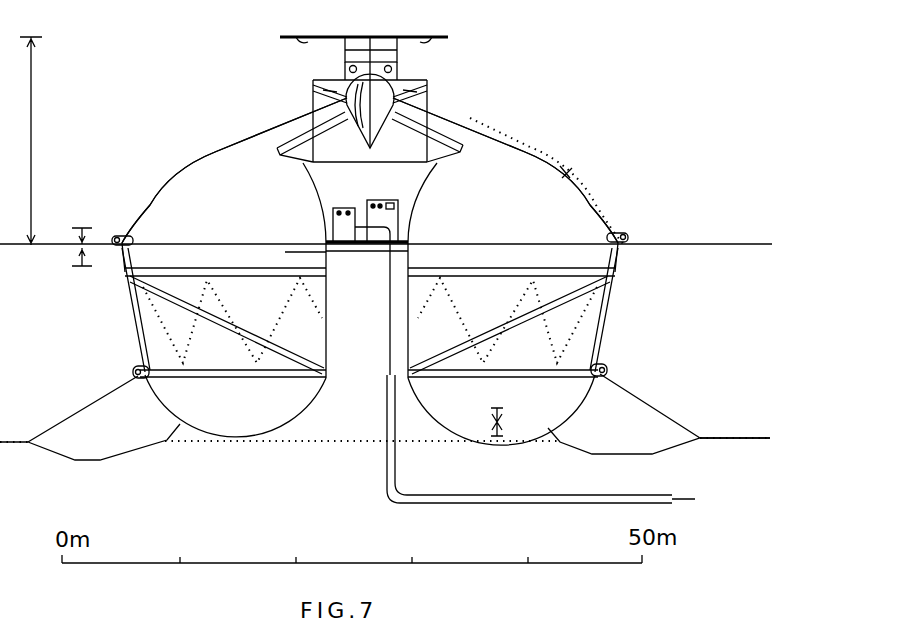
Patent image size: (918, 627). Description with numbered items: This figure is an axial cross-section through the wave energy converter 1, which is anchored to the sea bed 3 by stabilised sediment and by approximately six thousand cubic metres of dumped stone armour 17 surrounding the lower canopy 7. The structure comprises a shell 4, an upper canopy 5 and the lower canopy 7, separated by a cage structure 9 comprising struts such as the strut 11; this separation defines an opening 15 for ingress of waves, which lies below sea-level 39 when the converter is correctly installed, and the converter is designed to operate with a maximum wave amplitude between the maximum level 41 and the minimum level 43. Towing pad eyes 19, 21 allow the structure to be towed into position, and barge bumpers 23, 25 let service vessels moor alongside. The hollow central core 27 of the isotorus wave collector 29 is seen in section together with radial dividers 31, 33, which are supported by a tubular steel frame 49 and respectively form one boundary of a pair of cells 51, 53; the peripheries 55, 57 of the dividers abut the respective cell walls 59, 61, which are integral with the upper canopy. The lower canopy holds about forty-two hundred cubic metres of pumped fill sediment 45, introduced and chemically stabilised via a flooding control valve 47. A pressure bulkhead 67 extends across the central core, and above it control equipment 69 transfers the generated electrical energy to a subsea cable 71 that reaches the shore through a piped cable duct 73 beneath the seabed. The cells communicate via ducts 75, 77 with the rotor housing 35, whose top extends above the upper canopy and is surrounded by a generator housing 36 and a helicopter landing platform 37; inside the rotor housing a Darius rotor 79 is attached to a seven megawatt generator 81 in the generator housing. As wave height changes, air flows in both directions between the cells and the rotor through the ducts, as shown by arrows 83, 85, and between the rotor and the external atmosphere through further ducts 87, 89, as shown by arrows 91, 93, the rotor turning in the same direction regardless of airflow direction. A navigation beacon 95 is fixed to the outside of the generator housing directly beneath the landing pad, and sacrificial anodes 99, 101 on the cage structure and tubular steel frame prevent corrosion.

The wave energy converter 1 is at (635, 126).
The sea bed 3 is at (738, 438).
The shell 4 is at (548, 142).
The upper canopy 5 is at (563, 173).
The lower canopy 7 is at (457, 420).
The cage structure 9 is at (126, 290).
The strut 11 is at (140, 340).
The opening 15 is at (590, 298).
The dumped stone armour 17 is at (648, 430).
The towing pad eye 19 is at (130, 378).
The towing pad eye 21 is at (602, 373).
The barge bumper 23 is at (117, 235).
The barge bumper 25 is at (627, 236).
The hollow central core 27 is at (360, 412).
The isotorus wave collector 29 is at (618, 257).
The radial divider 31 is at (240, 318).
The radial divider 33 is at (488, 313).
The rotor housing 35 is at (432, 108).
The generator housing 36 is at (400, 63).
The helicopter landing platform 37 is at (447, 38).
The sea-level 39 is at (723, 243).
The maximum level 41 is at (70, 234).
The minimum level 43 is at (71, 265).
The pumped fill sediment 45 is at (200, 392).
The flooding control valve 47 is at (512, 427).
The tubular steel frame 49 is at (202, 318).
The cell 51 is at (182, 188).
The cell 53 is at (582, 200).
The periphery 55 is at (153, 208).
The periphery 57 is at (418, 190).
The cell wall 59 is at (199, 153).
The cell wall 61 is at (603, 227).
The pressure bulkhead 67 is at (324, 241).
The control equipment 69 is at (353, 208).
The subsea cable 71 is at (388, 308).
The piped cable duct 73 is at (386, 372).
The duct 75 is at (322, 137).
The duct 77 is at (418, 135).
The Darius rotor 79 is at (344, 92).
The generator 81 is at (350, 42).
The arrow 83 is at (287, 122).
The arrow 85 is at (458, 128).
The further duct 87 is at (318, 93).
The further duct 89 is at (428, 78).
The arrow 91 is at (313, 85).
The arrow 93 is at (428, 93).
The navigation beacon 95 is at (430, 42).
The sacrificial anode 99 is at (555, 294).
The sacrificial anode 101 is at (596, 314).